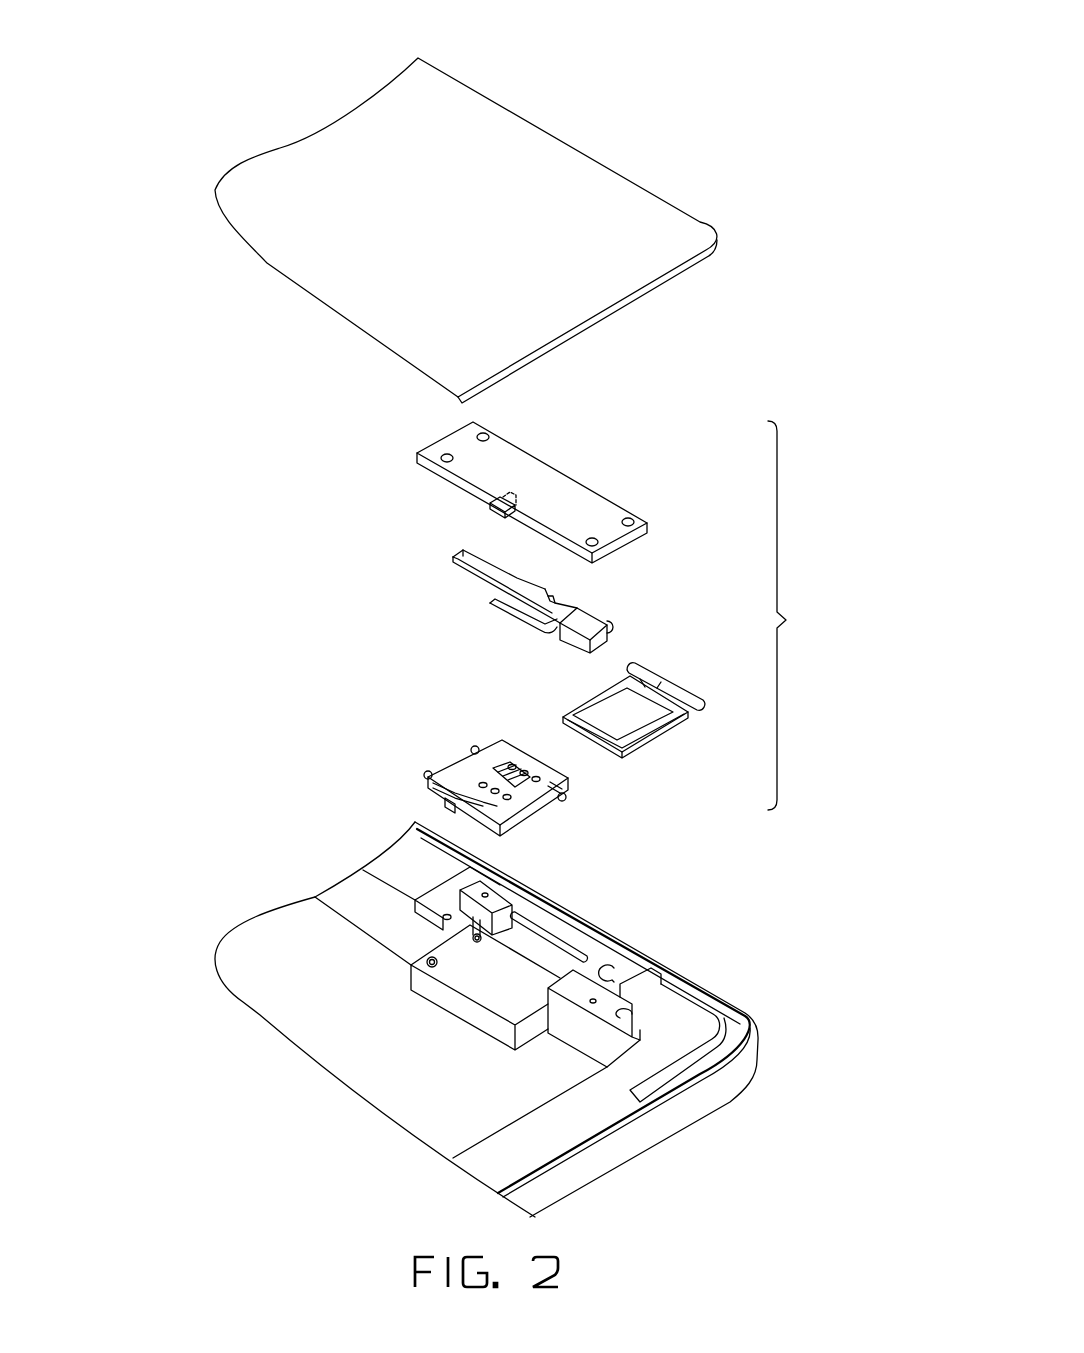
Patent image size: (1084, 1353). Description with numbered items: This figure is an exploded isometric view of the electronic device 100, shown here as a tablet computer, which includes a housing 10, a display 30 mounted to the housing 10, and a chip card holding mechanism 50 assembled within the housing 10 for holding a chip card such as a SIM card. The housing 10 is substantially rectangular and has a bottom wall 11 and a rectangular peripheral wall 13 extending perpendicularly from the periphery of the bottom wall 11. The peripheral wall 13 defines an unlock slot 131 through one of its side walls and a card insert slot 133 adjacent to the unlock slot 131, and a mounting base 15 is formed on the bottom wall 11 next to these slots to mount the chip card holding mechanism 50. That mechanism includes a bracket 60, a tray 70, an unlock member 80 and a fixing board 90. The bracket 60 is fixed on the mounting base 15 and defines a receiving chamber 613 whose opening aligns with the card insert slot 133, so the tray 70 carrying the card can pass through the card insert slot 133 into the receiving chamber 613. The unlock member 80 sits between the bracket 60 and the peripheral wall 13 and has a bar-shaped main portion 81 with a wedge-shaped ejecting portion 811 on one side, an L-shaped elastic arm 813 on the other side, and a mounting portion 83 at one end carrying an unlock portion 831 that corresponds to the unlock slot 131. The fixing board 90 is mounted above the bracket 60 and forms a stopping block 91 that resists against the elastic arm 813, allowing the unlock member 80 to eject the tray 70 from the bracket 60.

The electronic device 100 is at (580, 63).
The housing 10 is at (506, 1019).
The bottom wall 11 is at (388, 1077).
The peripheral wall 13 is at (705, 984).
The unlock slot 131 is at (610, 972).
The card insert slot 133 is at (560, 943).
The mounting base 15 is at (517, 947).
The display 30 is at (648, 212).
The chip card holding mechanism 50 is at (800, 615).
The bracket 60 is at (467, 773).
The receiving chamber 613 is at (500, 770).
The tray 70 is at (667, 687).
The unlock member 80 is at (441, 540).
The main portion 81 is at (473, 560).
The ejecting portion 811 is at (540, 587).
The elastic arm 813 is at (502, 610).
The mounting portion 83 is at (580, 620).
The unlock portion 831 is at (615, 628).
The fixing board 90 is at (592, 505).
The stopping block 91 is at (517, 481).